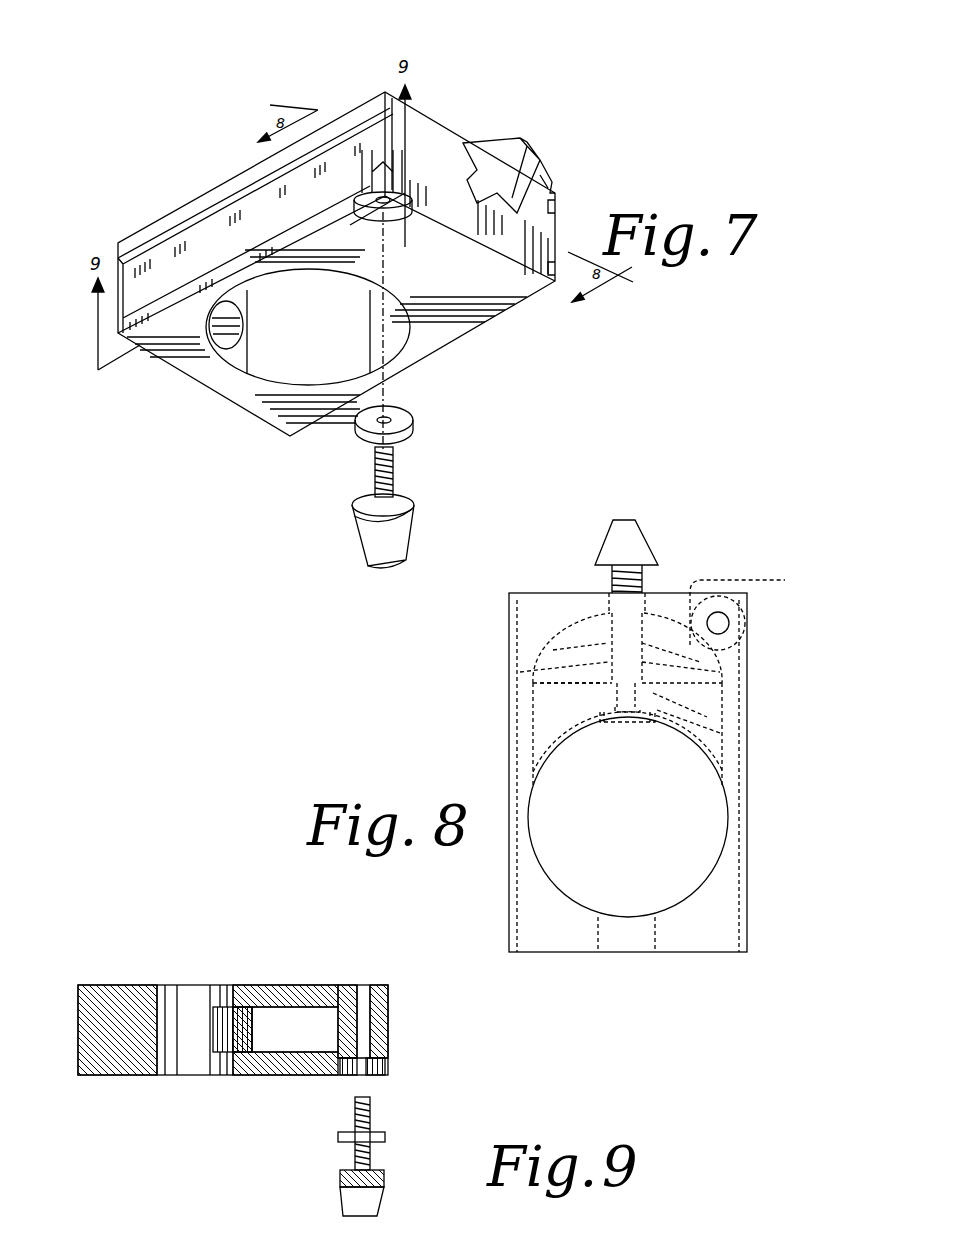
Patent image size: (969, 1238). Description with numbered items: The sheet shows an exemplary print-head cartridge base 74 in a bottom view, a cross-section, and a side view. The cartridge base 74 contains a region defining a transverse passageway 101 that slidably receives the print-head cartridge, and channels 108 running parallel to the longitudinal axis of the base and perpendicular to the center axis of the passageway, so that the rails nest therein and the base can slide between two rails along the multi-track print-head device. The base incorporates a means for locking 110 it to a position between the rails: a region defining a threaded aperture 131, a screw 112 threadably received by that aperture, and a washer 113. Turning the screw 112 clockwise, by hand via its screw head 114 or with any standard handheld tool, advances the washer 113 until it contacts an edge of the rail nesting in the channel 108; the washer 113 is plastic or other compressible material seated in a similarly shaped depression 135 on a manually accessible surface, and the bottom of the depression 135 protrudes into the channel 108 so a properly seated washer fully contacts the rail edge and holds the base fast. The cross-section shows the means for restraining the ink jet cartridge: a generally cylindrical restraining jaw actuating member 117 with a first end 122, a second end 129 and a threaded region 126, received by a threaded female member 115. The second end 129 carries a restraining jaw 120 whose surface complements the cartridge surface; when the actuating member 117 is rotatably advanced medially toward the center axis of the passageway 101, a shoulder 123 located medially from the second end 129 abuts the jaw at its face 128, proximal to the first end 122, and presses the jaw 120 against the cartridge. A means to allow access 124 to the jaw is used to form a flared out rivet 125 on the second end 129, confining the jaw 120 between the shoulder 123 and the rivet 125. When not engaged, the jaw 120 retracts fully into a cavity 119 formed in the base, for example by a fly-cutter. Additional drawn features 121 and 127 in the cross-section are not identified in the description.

In FIG. 7, the cartridge base 74 is at (603, 306).
In FIG. 8, the cartridge base 74 is at (788, 777).
In FIG. 9, the cartridge base 74 is at (198, 1096).
In FIG. 7, the transverse passageway 101 is at (295, 365).
In FIG. 8, the transverse passageway 101 is at (747, 808).
In FIG. 7, the channel 108 is at (400, 128).
In FIG. 8, the channel 108 is at (628, 772).
In FIG. 7, the means for locking 110 is at (388, 225).
In FIG. 8, the means for locking 110 is at (740, 612).
In FIG. 9, the means for locking 110 is at (390, 1062).
In FIG. 7, the screw 112 is at (376, 458).
In FIG. 9, the screw 112 is at (355, 1105).
In FIG. 7, the washer 113 is at (414, 426).
In FIG. 9, the washer 113 is at (385, 1138).
In FIG. 7, the screw head 114 is at (398, 545).
In FIG. 9, the screw head 114 is at (340, 1175).
In FIG. 7, the threaded female member 115 is at (452, 132).
In FIG. 8, the threaded female member 115 is at (761, 610).
In FIG. 7, the restraining jaw actuating member 117 is at (535, 132).
In FIG. 8, the restraining jaw actuating member 117 is at (612, 593).
In FIG. 8, the cavity 119 is at (745, 657).
In FIG. 8, the restraining jaw 120 is at (533, 714).
In FIG. 8, the slot 121 is at (592, 700).
In FIG. 8, the first end 122 is at (633, 545).
In FIG. 8, the shoulder 123 is at (553, 626).
In FIG. 7, the means to allow access 124 is at (228, 365).
In FIG. 8, the means to allow access 124 is at (628, 938).
In FIG. 8, the flared out rivet 125 is at (640, 716).
In FIG. 8, the threaded region 126 is at (652, 592).
In FIG. 8, the chamber 127 is at (740, 678).
In FIG. 8, the face 128 is at (520, 677).
In FIG. 8, the second end 129 is at (745, 715).
In FIG. 9, the threaded aperture 131 is at (390, 995).
In FIG. 9, the depression 135 is at (390, 1068).